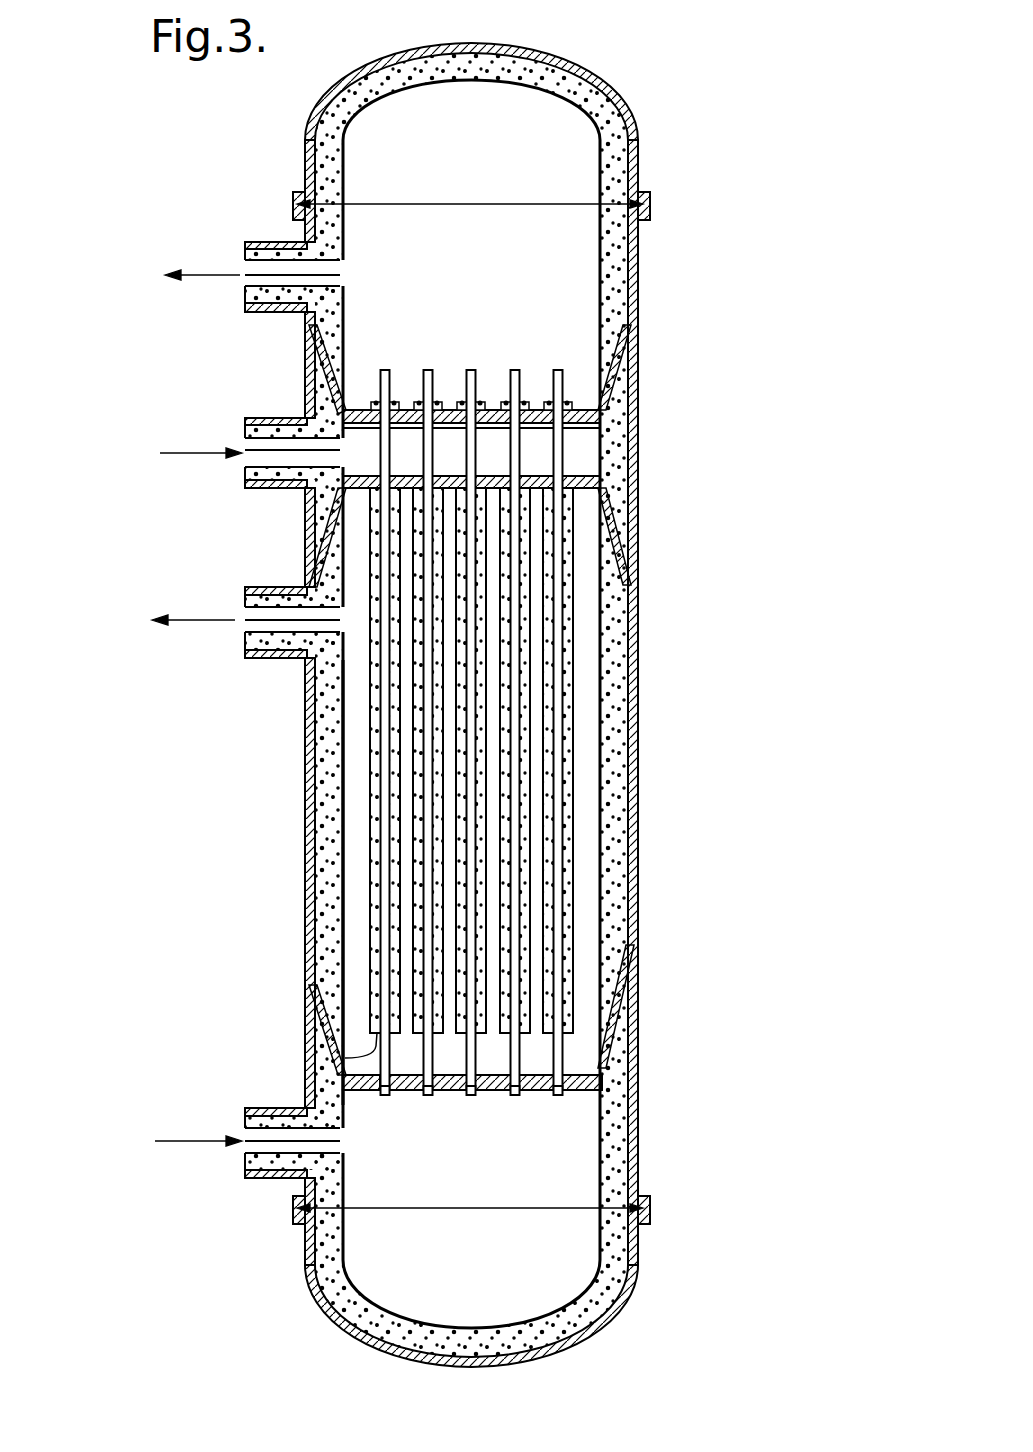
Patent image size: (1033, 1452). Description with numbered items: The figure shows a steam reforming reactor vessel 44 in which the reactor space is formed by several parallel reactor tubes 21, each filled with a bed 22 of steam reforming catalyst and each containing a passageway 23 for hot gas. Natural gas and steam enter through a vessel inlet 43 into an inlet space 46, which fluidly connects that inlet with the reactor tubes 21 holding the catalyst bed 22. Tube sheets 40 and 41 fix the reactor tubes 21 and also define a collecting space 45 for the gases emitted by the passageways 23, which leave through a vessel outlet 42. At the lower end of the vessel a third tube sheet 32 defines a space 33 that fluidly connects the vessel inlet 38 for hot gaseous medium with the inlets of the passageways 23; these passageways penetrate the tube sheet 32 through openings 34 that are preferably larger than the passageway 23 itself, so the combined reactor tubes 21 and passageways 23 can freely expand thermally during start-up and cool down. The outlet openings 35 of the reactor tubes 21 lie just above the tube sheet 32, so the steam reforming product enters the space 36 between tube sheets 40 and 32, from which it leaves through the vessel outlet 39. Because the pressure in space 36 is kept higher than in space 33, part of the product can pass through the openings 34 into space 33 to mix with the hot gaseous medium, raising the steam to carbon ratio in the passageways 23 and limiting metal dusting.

The reactor tube 21 is at (573, 992).
The bed of steam reforming catalyst 22 is at (562, 1010).
The passageway 23 is at (600, 1057).
The third tube sheet 32 is at (352, 1082).
The space 33 is at (560, 1257).
The opening 34 is at (393, 1093).
The outlet opening 35 is at (342, 1074).
The space 36 is at (357, 886).
The vessel inlet 38 is at (253, 1180).
The vessel outlet 39 is at (268, 658).
The tube sheet 40 is at (638, 484).
The tube sheet 41 is at (607, 418).
The vessel outlet 42 is at (253, 242).
The vessel inlet 43 is at (255, 418).
The reactor vessel 44 is at (640, 690).
The collecting space 45 is at (573, 268).
The inlet space 46 is at (583, 448).